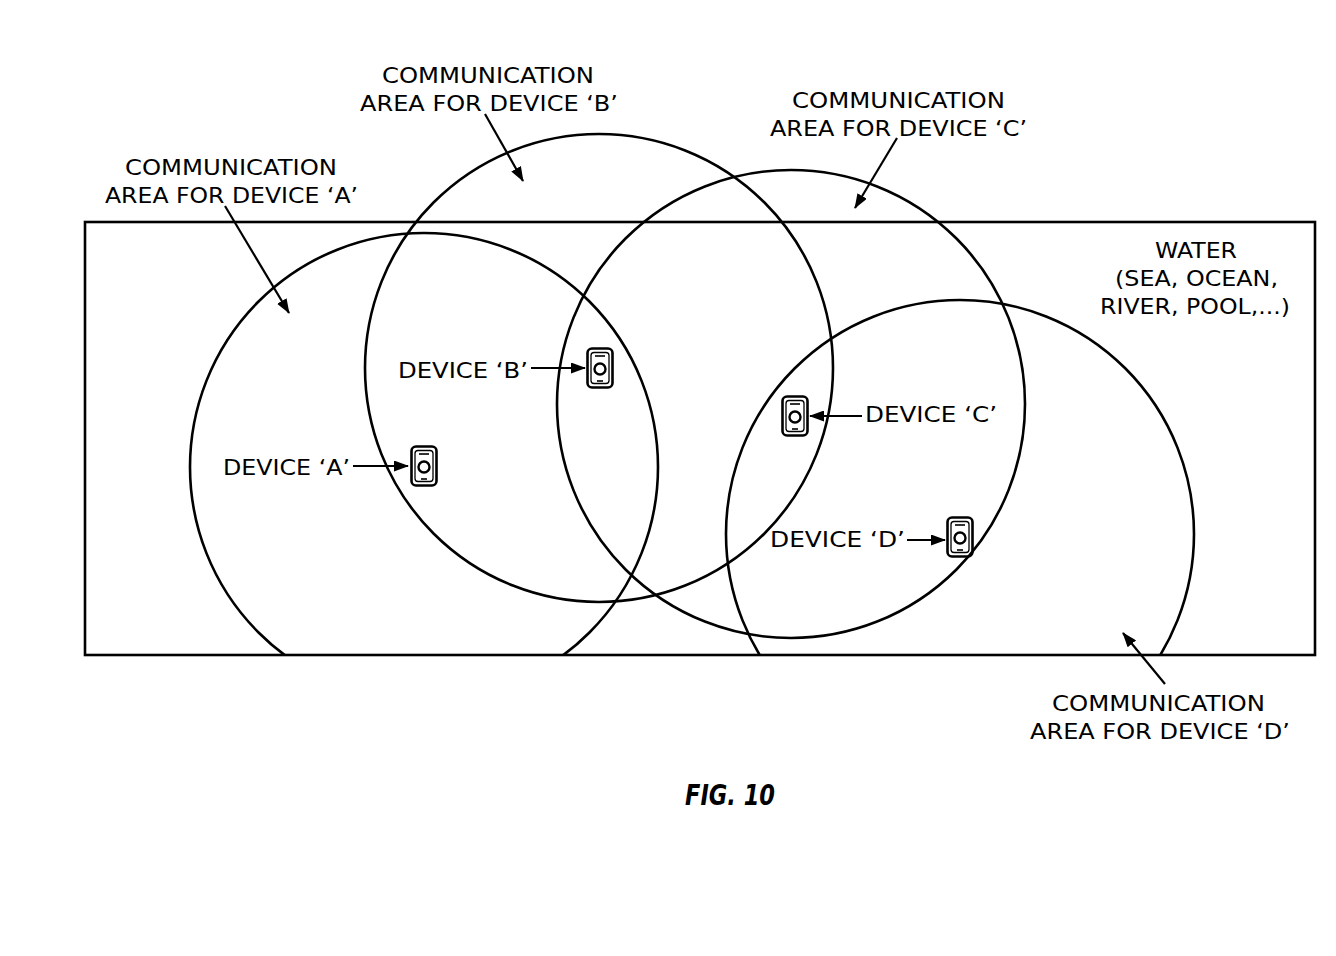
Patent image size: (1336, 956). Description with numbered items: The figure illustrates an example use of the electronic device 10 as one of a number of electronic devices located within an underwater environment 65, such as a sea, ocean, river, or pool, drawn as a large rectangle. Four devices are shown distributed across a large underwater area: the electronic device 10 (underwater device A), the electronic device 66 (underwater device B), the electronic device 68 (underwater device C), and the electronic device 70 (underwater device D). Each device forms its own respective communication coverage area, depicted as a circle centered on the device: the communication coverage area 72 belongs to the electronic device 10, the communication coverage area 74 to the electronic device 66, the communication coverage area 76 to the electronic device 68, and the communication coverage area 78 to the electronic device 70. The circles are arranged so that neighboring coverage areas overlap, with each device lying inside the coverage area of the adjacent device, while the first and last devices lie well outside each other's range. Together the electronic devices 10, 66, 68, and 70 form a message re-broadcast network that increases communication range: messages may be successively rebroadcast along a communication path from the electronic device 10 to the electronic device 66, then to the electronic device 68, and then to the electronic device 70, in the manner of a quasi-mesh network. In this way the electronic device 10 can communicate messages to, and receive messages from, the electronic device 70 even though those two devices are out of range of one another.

The underwater environment 65 is at (1192, 121).
The electronic device 10 is at (439, 462).
The electronic device 66 is at (603, 388).
The electronic device 68 is at (781, 406).
The electronic device 70 is at (958, 517).
The communication coverage area 72 is at (231, 334).
The communication coverage area 74 is at (630, 134).
The communication coverage area 76 is at (907, 197).
The communication coverage area 78 is at (1153, 395).